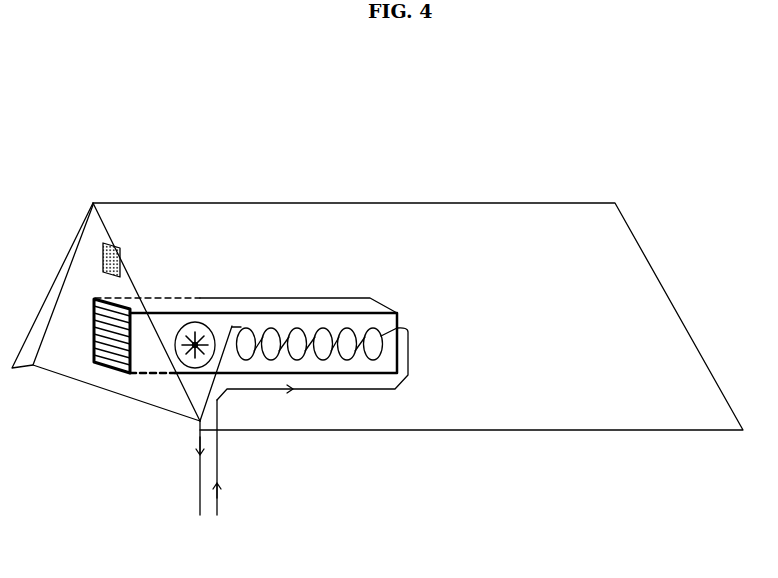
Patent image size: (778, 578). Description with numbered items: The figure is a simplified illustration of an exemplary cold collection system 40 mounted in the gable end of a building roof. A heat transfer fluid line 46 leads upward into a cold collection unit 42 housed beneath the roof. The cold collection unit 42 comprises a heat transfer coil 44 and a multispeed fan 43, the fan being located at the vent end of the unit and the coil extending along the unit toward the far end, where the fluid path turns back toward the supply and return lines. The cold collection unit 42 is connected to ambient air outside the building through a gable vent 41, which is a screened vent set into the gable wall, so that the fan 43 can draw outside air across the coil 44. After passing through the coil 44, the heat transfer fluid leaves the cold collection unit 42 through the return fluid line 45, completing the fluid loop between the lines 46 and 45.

The cold collection system 40 is at (99, 143).
The gable vent 41 is at (92, 348).
The cold collection unit 42 is at (275, 308).
The multispeed fan 43 is at (194, 322).
The heat transfer coil 44 is at (320, 314).
The return fluid line 45 is at (200, 472).
The heat transfer fluid line 46 is at (217, 473).